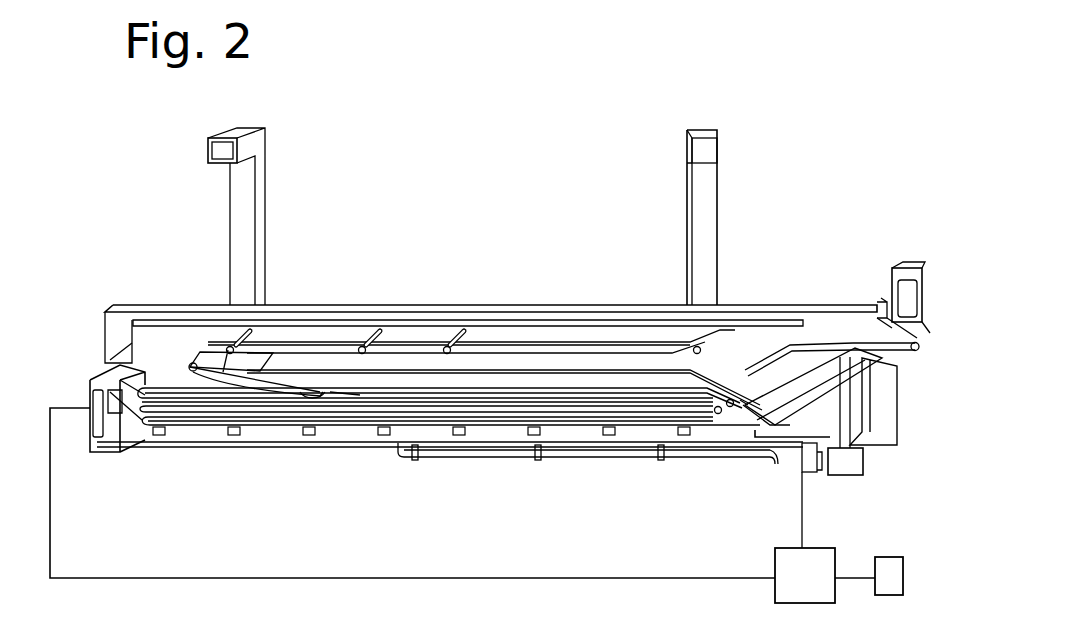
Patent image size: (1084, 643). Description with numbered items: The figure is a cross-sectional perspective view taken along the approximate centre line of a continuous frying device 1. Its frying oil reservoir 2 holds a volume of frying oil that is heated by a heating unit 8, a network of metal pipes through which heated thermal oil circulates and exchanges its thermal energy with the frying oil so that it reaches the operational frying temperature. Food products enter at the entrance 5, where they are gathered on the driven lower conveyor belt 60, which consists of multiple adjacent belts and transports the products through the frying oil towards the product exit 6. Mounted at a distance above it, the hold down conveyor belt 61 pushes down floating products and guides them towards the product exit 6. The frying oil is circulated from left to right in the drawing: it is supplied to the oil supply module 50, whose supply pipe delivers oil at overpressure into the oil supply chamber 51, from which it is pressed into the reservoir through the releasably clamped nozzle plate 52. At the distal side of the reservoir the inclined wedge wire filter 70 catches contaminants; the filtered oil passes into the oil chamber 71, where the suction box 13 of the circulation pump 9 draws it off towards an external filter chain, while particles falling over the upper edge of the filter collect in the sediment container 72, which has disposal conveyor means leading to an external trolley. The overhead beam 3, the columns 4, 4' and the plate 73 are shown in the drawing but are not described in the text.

The continuous frying device 1 is at (600, 470).
The frying oil reservoir 2 is at (385, 436).
The top beam 3 is at (462, 305).
The first column 4 is at (218, 216).
The second column 4' is at (670, 217).
The entrance 5 is at (97, 362).
The oil supply module 50 is at (100, 432).
The oil supply chamber 51 is at (116, 412).
The nozzle plate 52 is at (130, 395).
The product exit 6 is at (925, 338).
The lower conveyor belt 60 is at (228, 392).
The hold down conveyor belt 61 is at (308, 370).
The heating unit 8 is at (500, 422).
The circulation pump 9 is at (805, 575).
The suction box 13 is at (869, 576).
The wedge wire filter 70 is at (764, 405).
The oil chamber 71 is at (820, 425).
The sediment container 72 is at (850, 460).
The side plate 73 is at (850, 410).